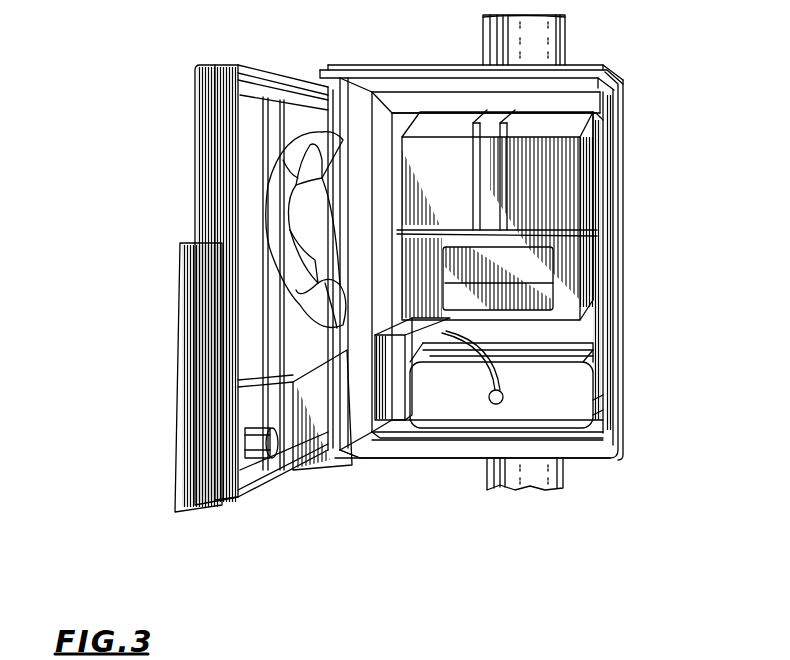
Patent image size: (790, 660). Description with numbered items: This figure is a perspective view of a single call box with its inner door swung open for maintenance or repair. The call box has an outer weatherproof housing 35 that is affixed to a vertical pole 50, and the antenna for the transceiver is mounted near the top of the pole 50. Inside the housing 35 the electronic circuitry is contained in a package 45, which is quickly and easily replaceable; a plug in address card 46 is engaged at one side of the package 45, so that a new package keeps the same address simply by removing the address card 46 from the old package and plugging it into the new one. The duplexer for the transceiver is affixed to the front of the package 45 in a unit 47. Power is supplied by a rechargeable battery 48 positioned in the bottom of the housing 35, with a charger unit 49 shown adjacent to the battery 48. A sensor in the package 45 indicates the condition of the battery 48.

The outer weatherproof housing 35 is at (627, 332).
The electronics package 45 is at (592, 190).
The plug in address card 46 is at (463, 123).
The duplexer unit 47 is at (447, 275).
The rechargeable battery 48 is at (583, 392).
The charger unit 49 is at (393, 413).
The vertical pole 50 is at (565, 30).